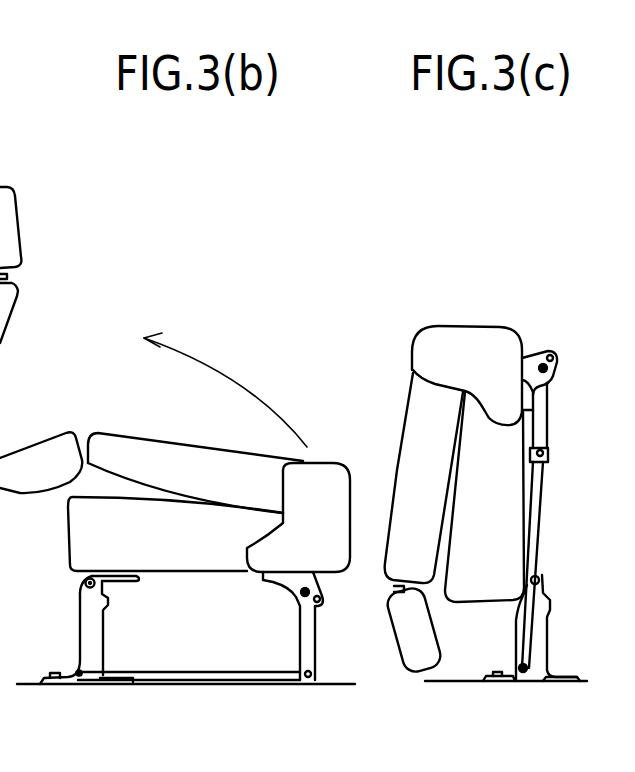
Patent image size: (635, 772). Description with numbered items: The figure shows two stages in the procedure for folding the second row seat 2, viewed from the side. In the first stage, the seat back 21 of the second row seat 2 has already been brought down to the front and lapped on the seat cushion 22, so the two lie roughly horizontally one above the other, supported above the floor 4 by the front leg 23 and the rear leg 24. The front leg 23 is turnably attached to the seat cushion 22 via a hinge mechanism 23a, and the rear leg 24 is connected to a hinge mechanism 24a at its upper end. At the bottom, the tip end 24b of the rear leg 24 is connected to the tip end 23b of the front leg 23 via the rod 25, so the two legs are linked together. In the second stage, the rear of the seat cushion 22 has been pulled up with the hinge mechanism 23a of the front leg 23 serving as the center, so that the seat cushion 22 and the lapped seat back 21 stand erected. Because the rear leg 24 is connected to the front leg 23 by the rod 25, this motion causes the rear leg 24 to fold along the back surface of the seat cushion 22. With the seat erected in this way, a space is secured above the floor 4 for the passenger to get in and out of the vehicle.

In FIG. 3B, the second row seat 2 is at (212, 278).
In FIG. 3C, the second row seat 2 is at (486, 278).
In FIG. 3C, the floor 4 is at (450, 681).
In FIG. 3B, the seat back 21 is at (142, 447).
In FIG. 3C, the seat back 21 is at (417, 397).
In FIG. 3B, the seat cushion 22 is at (76, 531).
In FIG. 3C, the seat cushion 22 is at (465, 456).
In FIG. 3B, the front leg 23 is at (80, 633).
In FIG. 3C, the front leg 23 is at (535, 640).
In FIG. 3B, the hinge mechanism 23a is at (80, 578).
In FIG. 3B, the tip end of the front leg 23b is at (75, 685).
In FIG. 3B, the rear leg 24 is at (308, 650).
In FIG. 3C, the rear leg 24 is at (547, 403).
In FIG. 3B, the hinge mechanism 24a is at (297, 595).
In FIG. 3B, the tip end of the rear leg 24b is at (304, 686).
In FIG. 3B, the rod 25 is at (197, 684).
In FIG. 3C, the rod 25 is at (533, 513).